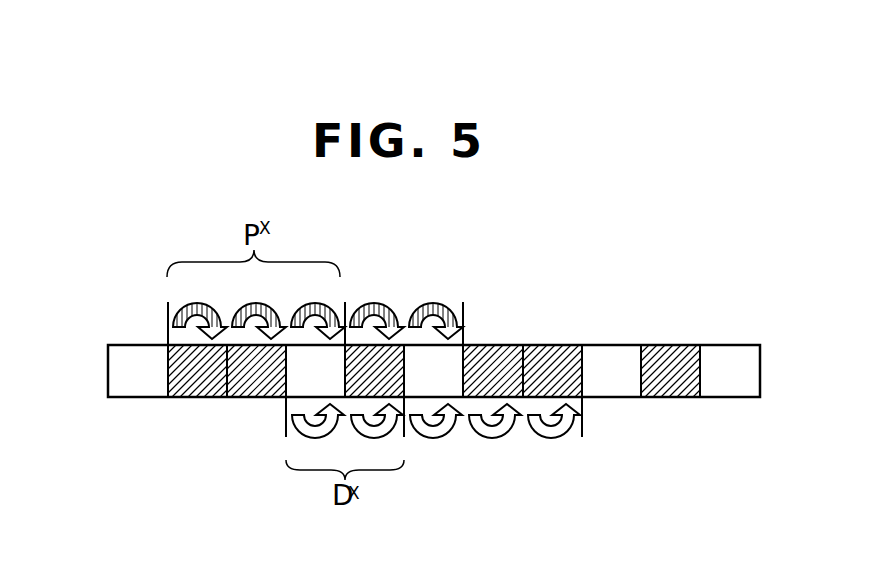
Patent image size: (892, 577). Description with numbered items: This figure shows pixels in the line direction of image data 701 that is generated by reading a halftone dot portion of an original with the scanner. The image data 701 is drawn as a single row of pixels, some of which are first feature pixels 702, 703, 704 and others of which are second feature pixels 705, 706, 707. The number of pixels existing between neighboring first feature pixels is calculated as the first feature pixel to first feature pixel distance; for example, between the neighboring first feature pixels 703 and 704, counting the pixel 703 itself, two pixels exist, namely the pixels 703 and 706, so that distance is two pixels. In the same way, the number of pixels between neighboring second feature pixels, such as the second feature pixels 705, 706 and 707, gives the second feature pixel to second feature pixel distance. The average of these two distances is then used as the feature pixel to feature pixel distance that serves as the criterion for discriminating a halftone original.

The image data 701 is at (92, 344).
The first feature pixel 702 is at (197, 378).
The first feature pixel 703 is at (371, 362).
The first feature pixel 704 is at (497, 363).
The second feature pixel 705 is at (312, 377).
The second feature pixel 706 is at (428, 377).
The second feature pixel 707 is at (612, 373).